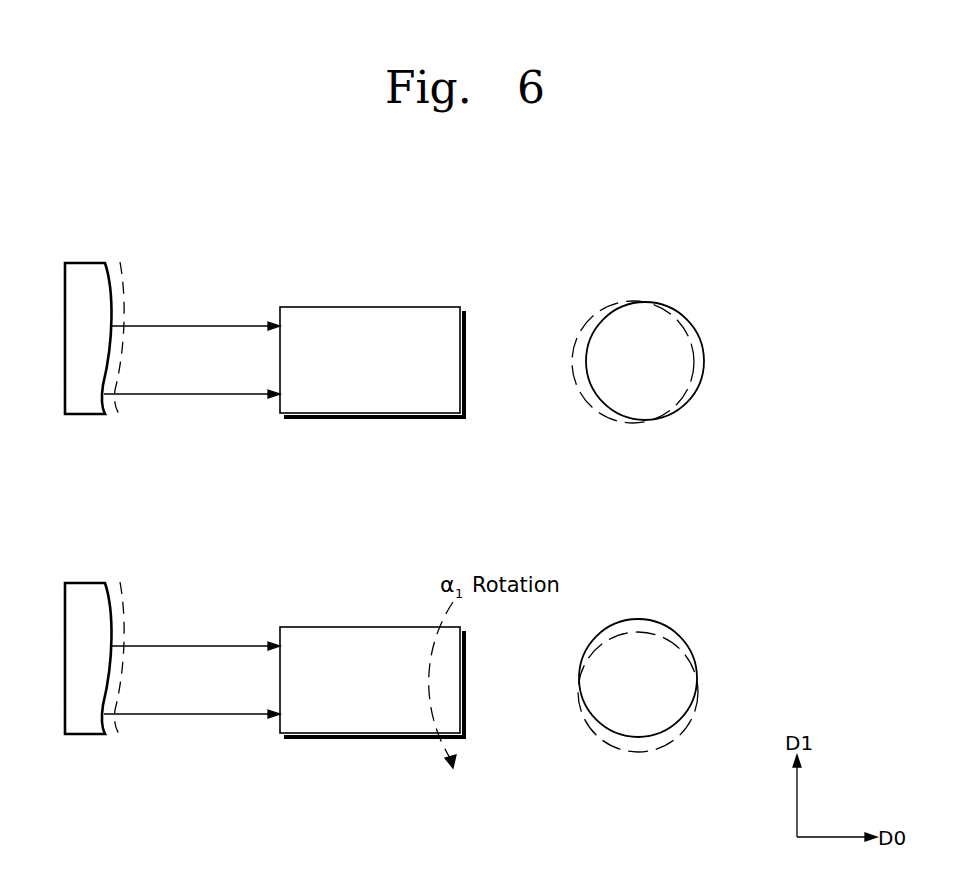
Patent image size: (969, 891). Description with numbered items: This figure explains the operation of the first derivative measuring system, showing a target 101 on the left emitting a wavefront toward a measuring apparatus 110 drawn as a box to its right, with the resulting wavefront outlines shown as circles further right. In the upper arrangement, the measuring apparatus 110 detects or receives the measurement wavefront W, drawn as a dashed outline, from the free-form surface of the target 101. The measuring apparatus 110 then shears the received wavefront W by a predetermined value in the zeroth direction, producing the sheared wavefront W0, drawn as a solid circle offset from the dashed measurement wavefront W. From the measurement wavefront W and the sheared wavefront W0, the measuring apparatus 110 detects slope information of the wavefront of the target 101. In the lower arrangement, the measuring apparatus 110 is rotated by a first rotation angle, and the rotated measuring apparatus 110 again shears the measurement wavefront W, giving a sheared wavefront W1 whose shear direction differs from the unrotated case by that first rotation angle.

The target 101 is at (78, 262).
The measuring apparatus 110 is at (348, 307).
The measurement wavefront W is at (123, 285).
The sheared wavefront W0 is at (705, 357).
The rotated wafer outline W1 is at (690, 631).